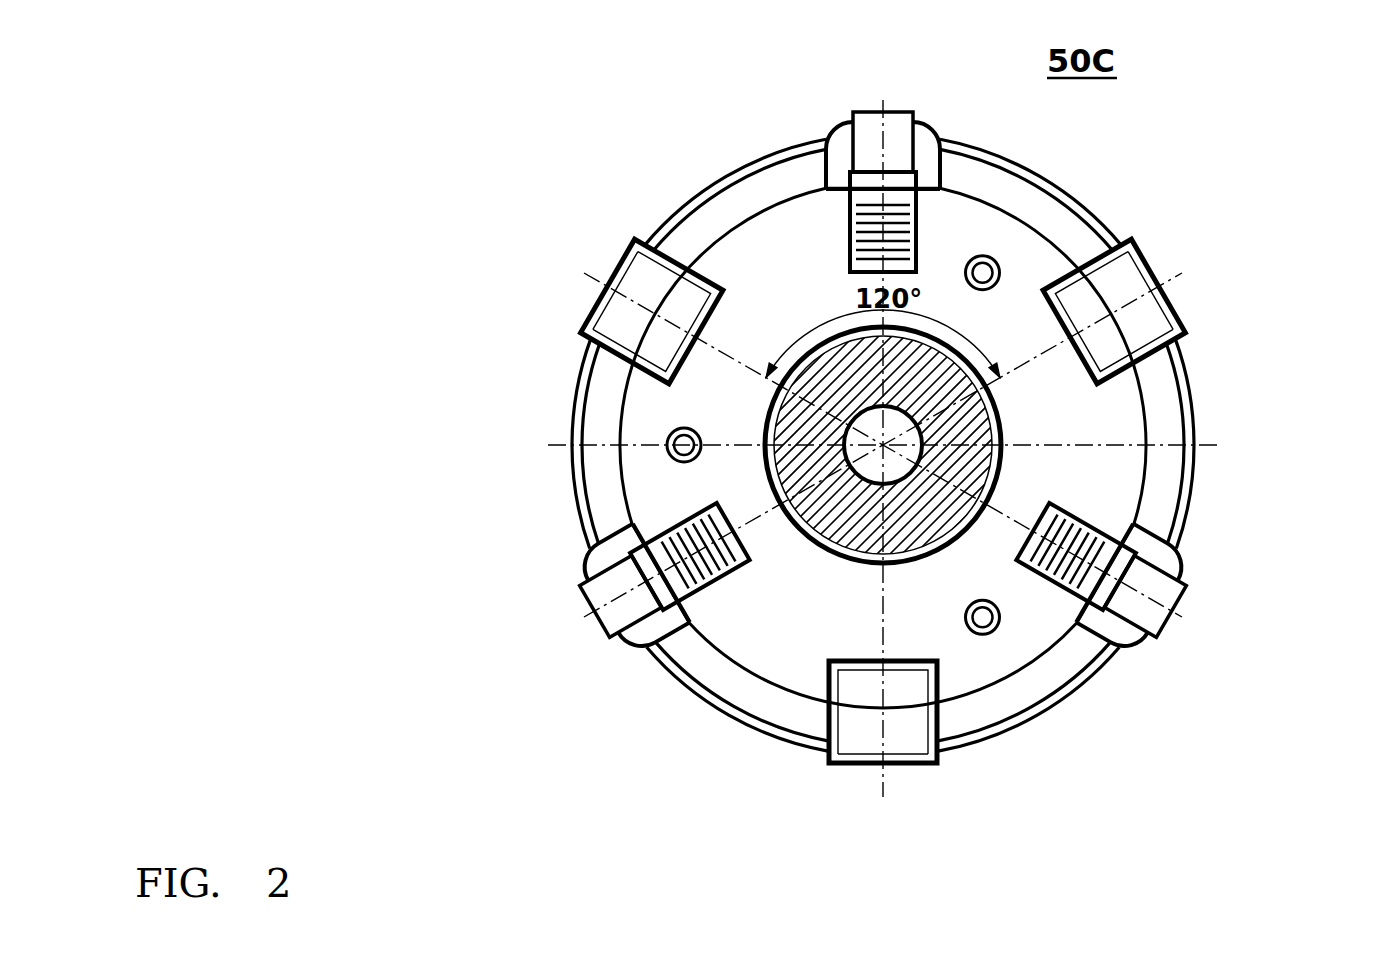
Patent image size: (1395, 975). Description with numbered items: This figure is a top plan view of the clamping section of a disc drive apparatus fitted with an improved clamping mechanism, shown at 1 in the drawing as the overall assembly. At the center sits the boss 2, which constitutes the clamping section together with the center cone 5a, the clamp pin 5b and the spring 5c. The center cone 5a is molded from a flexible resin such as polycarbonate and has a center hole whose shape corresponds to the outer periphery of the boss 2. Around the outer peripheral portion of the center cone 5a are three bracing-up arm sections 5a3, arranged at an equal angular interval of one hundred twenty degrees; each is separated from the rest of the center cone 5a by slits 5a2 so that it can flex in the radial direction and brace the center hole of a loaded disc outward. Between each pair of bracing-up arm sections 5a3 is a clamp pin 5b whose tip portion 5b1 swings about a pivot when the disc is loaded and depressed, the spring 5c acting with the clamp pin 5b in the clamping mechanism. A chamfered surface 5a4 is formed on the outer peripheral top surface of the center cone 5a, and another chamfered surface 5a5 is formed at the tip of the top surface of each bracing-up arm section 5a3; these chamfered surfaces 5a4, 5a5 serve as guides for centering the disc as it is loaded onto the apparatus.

The rotor hub 1 is at (830, 553).
The boss 2 is at (1003, 479).
The center cone 5a is at (1020, 248).
The slits 5a2 is at (638, 247).
The bracing-up arm sections 5a3 is at (617, 265).
The chamfered surface 5a5 is at (602, 296).
The chamfered surface 5a4 is at (742, 198).
The clamp pin 5b is at (872, 127).
The tip portion 5b1 is at (902, 109).
The spring 5c is at (867, 203).